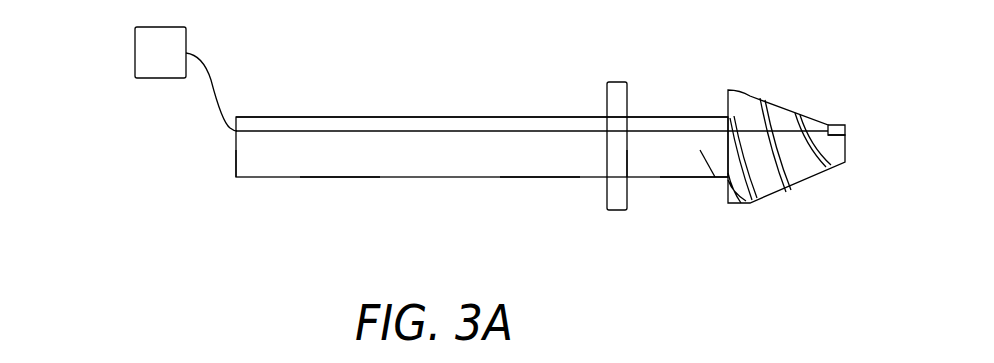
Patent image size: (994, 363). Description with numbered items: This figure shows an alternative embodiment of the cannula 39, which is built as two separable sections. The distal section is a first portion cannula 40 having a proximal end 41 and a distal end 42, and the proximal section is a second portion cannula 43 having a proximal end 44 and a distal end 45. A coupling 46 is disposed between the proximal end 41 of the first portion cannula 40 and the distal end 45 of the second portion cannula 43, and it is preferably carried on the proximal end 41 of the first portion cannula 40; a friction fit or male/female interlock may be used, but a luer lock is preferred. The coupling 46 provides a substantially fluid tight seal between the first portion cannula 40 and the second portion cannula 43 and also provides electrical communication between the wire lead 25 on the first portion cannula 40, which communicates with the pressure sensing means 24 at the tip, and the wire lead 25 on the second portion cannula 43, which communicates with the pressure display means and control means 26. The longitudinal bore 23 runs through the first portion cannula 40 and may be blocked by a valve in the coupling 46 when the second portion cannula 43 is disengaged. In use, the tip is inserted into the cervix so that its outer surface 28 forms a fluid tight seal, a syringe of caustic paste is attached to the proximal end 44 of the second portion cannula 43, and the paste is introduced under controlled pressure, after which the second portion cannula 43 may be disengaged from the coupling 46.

The longitudinal bore 23 is at (482, 152).
The pressure sensing means 24 is at (836, 125).
The wire lead 25 is at (210, 76).
The pressure display means and control means 26 is at (160, 52).
The outer surface 28 is at (760, 185).
The cannula 39 is at (365, 97).
The first portion cannula 40 is at (696, 177).
The proximal end 41 is at (637, 178).
The distal end 42 is at (707, 178).
The second portion cannula 43 is at (343, 178).
The proximal end 44 is at (240, 178).
The distal end 45 is at (538, 178).
The coupling 46 is at (615, 82).